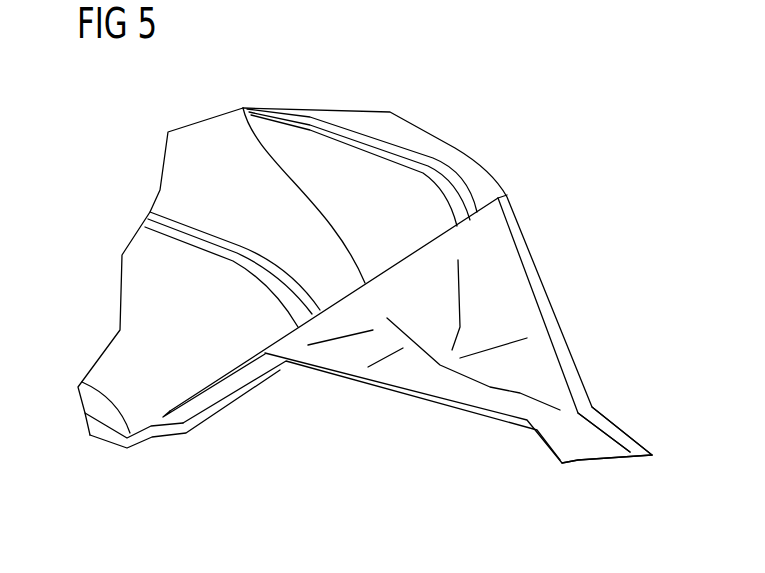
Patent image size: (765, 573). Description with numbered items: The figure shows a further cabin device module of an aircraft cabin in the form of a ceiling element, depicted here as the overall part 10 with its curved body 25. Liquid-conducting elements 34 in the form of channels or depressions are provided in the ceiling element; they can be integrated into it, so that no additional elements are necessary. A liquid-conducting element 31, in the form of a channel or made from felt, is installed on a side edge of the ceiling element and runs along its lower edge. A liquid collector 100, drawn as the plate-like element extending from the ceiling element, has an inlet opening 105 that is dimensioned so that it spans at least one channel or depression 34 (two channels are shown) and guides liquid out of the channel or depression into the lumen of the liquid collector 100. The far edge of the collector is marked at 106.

The vehicle component assembly 10 is at (337, 429).
The housing body 25 is at (168, 182).
The liquid-conducting element 31 is at (208, 400).
The liquid-conducting elements 34 is at (155, 228).
The liquid collector 100 is at (523, 307).
The inlet opening 105 is at (243, 108).
The edge flange 106 is at (603, 460).